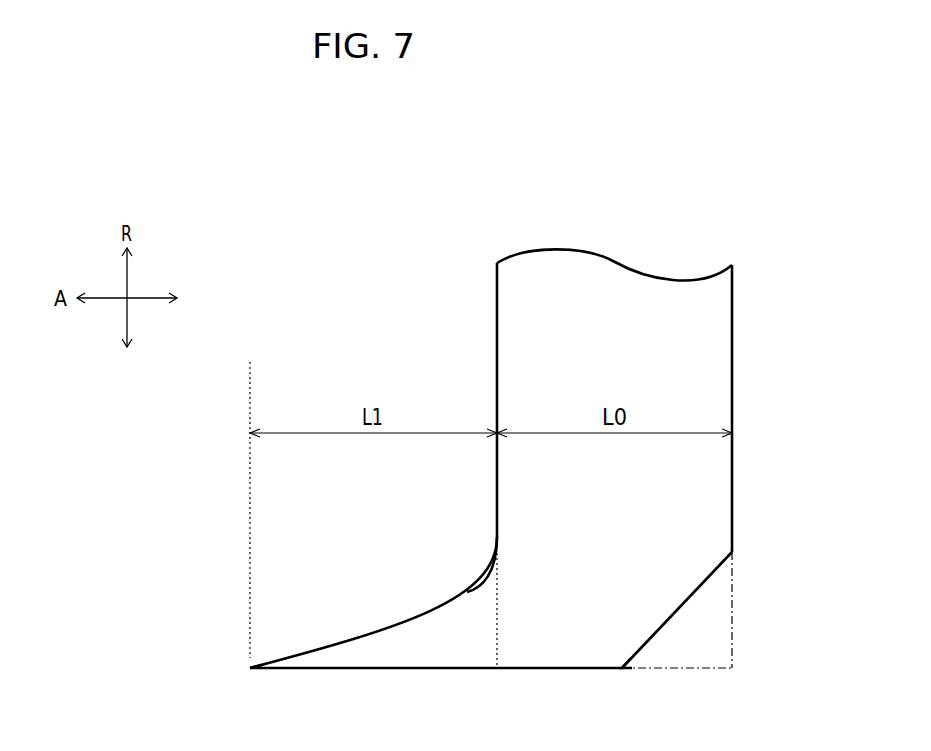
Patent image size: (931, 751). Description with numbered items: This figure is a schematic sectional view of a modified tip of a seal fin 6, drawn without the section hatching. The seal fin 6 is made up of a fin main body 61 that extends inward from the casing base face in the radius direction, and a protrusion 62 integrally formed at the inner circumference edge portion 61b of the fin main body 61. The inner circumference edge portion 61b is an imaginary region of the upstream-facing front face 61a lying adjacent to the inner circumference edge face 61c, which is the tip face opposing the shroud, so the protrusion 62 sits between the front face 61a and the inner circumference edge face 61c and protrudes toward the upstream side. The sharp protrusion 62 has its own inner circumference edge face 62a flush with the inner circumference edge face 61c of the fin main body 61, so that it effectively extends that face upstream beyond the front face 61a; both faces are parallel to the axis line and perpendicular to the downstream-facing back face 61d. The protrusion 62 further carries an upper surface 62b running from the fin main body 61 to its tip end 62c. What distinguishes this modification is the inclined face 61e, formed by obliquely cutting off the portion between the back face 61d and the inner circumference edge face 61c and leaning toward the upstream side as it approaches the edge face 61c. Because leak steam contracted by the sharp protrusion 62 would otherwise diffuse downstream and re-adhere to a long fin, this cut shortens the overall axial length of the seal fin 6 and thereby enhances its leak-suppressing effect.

The seal fin 6 is at (761, 327).
The fin main body 61 is at (705, 523).
The front face 61a is at (497, 348).
The inner circumference edge portion 61b is at (495, 598).
The inner circumference edge face 61c is at (618, 670).
The back face 61d is at (733, 473).
The inclined face 61e is at (677, 613).
The protrusion 62 is at (398, 641).
The inner circumference edge face 62a is at (373, 670).
The inclined surface 62b is at (318, 647).
The tip end 62c is at (250, 670).